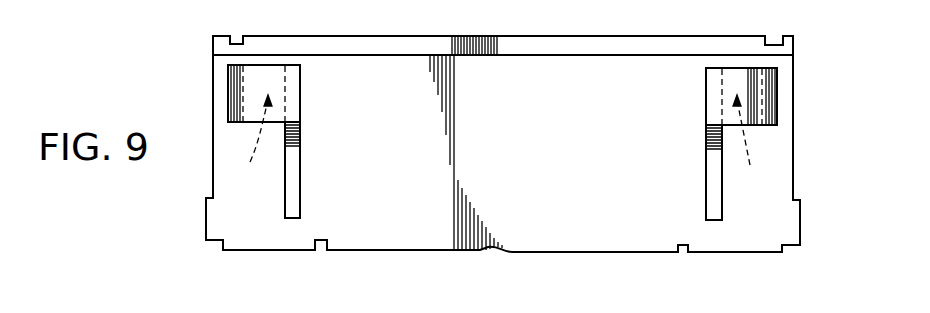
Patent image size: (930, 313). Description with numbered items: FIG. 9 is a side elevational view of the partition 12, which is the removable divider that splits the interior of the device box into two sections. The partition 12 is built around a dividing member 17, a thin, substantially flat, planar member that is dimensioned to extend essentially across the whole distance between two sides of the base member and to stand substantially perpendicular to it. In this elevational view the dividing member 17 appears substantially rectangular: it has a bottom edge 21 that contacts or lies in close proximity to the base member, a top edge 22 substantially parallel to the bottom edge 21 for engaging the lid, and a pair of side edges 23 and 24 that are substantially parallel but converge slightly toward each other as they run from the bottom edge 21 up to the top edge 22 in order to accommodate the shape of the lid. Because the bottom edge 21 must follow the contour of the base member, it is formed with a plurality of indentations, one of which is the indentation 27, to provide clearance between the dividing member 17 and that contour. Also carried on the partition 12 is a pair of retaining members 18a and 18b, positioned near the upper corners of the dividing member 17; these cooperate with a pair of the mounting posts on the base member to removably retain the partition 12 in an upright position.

The partition 12 is at (192, 197).
The dividing member 17 is at (498, 130).
The retaining member 18a is at (307, 98).
The retaining member 18b is at (700, 103).
The bottom edge 21 is at (590, 256).
The top edge 22 is at (485, 36).
The side edge 23 is at (213, 99).
The side edge 24 is at (793, 110).
The indentation 27 is at (503, 254).